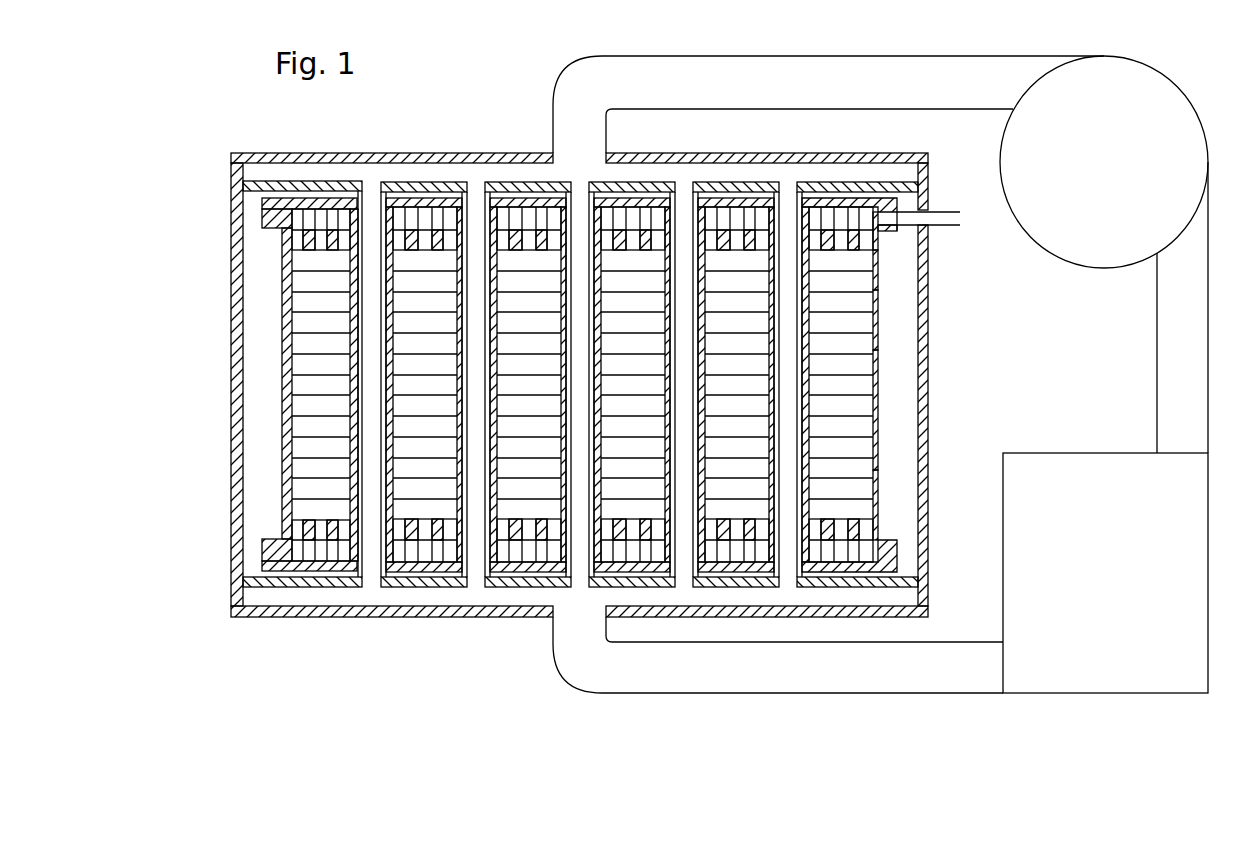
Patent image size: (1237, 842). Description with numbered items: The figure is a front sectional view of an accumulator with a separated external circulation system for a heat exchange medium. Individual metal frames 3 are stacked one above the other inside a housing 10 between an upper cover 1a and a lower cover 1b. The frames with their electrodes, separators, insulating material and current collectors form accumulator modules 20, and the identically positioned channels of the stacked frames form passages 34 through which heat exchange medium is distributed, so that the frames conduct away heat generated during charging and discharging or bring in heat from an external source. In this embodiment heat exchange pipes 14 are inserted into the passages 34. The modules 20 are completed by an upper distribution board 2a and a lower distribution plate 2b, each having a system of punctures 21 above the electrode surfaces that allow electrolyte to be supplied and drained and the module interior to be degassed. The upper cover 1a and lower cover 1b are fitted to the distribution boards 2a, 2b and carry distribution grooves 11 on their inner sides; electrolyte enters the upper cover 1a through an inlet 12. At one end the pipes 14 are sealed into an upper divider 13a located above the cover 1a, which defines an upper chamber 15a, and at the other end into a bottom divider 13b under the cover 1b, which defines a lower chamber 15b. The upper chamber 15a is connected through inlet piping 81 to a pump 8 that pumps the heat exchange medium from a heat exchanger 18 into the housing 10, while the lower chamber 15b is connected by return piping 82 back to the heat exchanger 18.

The upper cover 1a is at (890, 197).
The lower cover 1b is at (898, 557).
The upper distribution board 2a is at (873, 240).
The lower distribution plate 2b is at (877, 497).
The metal frame 3 is at (875, 323).
The pump 8 is at (1104, 254).
The housing 10 is at (322, 616).
The distribution grooves 11 is at (838, 220).
The inlet 12 is at (940, 216).
The upper divider 13a is at (250, 184).
The bottom divider 13b is at (252, 583).
The heat exchange pipe 14 is at (380, 200).
The upper chamber 15a is at (418, 170).
The lower chamber 15b is at (425, 592).
The heat exchanger 18 is at (1105, 573).
The accumulator module 20 is at (876, 401).
The punctures 21 is at (875, 280).
The passage 34 is at (358, 297).
The inlet piping 81 is at (553, 93).
The return piping 82 is at (553, 657).